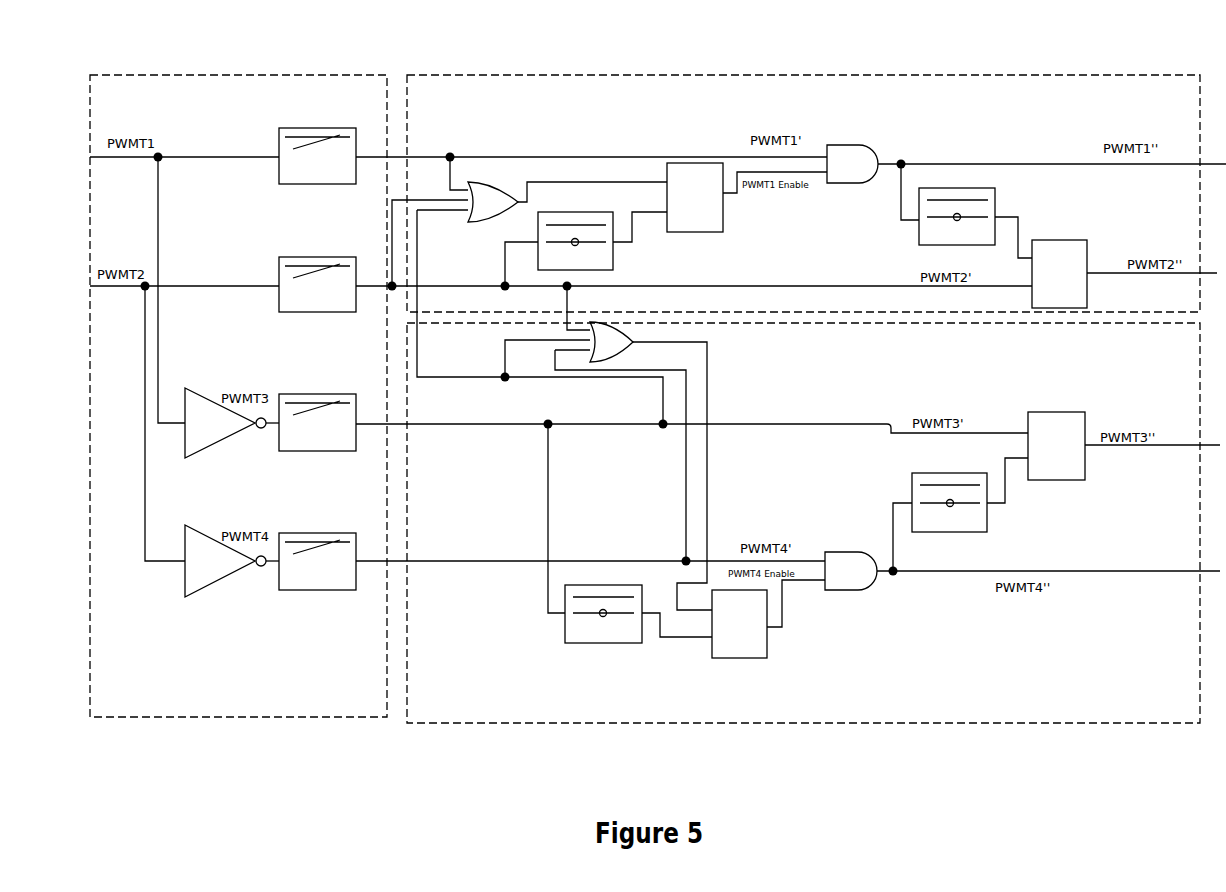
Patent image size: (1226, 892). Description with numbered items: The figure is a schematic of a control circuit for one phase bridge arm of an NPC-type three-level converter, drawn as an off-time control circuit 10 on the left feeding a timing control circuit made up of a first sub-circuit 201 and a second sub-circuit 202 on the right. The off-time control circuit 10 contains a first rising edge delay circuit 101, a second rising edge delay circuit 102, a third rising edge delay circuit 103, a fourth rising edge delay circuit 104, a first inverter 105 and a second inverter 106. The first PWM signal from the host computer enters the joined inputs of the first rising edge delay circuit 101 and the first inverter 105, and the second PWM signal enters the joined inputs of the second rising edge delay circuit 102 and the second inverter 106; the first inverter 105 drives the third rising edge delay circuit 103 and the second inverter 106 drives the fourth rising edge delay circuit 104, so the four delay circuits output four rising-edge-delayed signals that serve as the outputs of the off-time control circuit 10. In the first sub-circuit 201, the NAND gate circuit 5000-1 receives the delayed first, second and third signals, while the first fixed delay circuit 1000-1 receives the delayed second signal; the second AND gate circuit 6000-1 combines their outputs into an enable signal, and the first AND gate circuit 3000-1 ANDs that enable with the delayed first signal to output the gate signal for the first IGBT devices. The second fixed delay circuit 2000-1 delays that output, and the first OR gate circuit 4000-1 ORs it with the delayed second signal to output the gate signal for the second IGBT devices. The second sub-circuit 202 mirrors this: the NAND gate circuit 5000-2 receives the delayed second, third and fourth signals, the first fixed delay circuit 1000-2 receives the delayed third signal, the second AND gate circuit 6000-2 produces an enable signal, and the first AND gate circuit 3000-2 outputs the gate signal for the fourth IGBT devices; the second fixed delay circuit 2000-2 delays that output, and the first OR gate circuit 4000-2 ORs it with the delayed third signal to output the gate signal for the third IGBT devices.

The off-time control circuit 10 is at (245, 719).
The first sub-circuit 201 is at (735, 76).
The second sub-circuit 202 is at (749, 726).
The first rising edge delay circuit 101 is at (320, 185).
The second rising edge delay circuit 102 is at (320, 313).
The third rising edge delay circuit 103 is at (312, 452).
The fourth rising edge delay circuit 104 is at (318, 591).
The first inverter 105 is at (218, 442).
The second inverter 106 is at (218, 578).
The first fixed delay circuit 1000-1 is at (615, 257).
The first fixed delay circuit 1000-2 is at (578, 645).
The second fixed delay circuit 2000-1 is at (900, 224).
The second fixed delay circuit 2000-2 is at (990, 531).
The first AND gate circuit 3000-1 is at (857, 143).
The first AND gate circuit 3000-2 is at (840, 592).
The first OR gate circuit 4000-1 is at (1089, 295).
The first OR gate circuit 4000-2 is at (1060, 482).
The NAND gate circuit 5000-1 is at (482, 217).
The NAND gate circuit 5000-2 is at (625, 352).
The second AND gate circuit 6000-1 is at (725, 213).
The second AND gate circuit 6000-2 is at (735, 660).